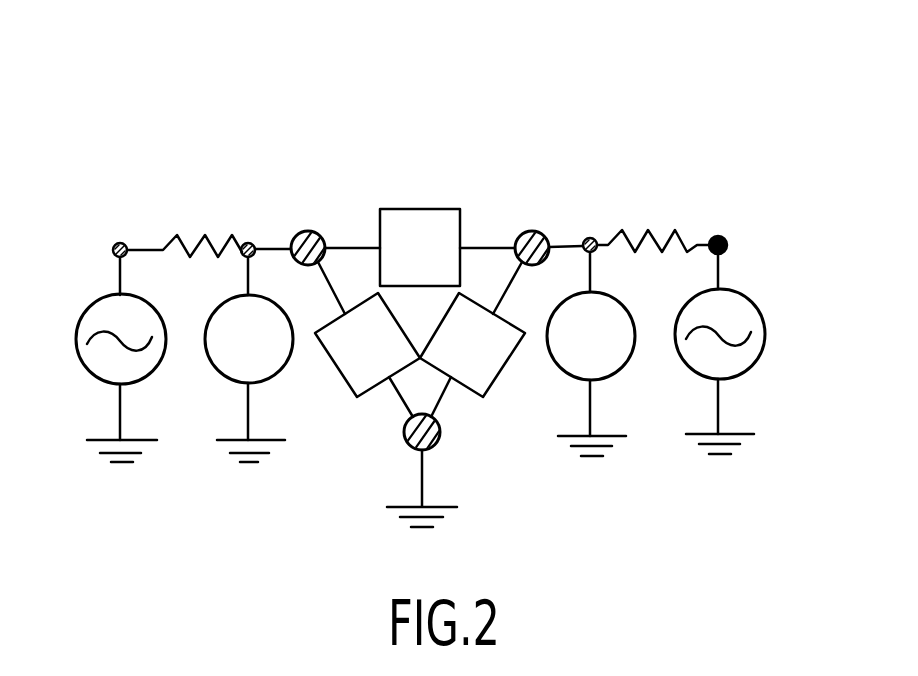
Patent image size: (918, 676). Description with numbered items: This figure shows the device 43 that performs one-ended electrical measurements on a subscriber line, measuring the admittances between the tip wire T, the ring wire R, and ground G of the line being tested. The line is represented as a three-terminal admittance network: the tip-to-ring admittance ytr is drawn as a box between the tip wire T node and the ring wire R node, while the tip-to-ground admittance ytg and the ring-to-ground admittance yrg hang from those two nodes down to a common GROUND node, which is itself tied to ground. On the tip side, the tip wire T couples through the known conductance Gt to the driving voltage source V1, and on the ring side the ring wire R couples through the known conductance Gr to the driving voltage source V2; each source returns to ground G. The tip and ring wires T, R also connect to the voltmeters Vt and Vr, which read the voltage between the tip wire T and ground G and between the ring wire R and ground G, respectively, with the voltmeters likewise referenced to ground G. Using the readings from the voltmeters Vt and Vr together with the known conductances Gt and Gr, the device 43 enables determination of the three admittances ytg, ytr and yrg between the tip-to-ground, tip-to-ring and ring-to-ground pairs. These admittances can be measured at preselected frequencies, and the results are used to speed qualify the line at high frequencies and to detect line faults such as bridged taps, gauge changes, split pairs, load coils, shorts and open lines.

The device 43 is at (419, 264).
The tip wire T is at (311, 235).
The ring wire R is at (528, 235).
The ground GROUND is at (464, 468).
The tip-to-ring admittance ytr is at (420, 247).
The tip-to-ground admittance ytg is at (367, 339).
The ring-to-ground admittance yrg is at (472, 339).
The known conductance Gt is at (184, 226).
The known conductance Gr is at (655, 224).
The driving voltage source V1 is at (98, 348).
The driving voltage source V2 is at (742, 344).
The voltmeter Vt is at (249, 348).
The voltmeter Vr is at (591, 344).
The ground G is at (240, 468).